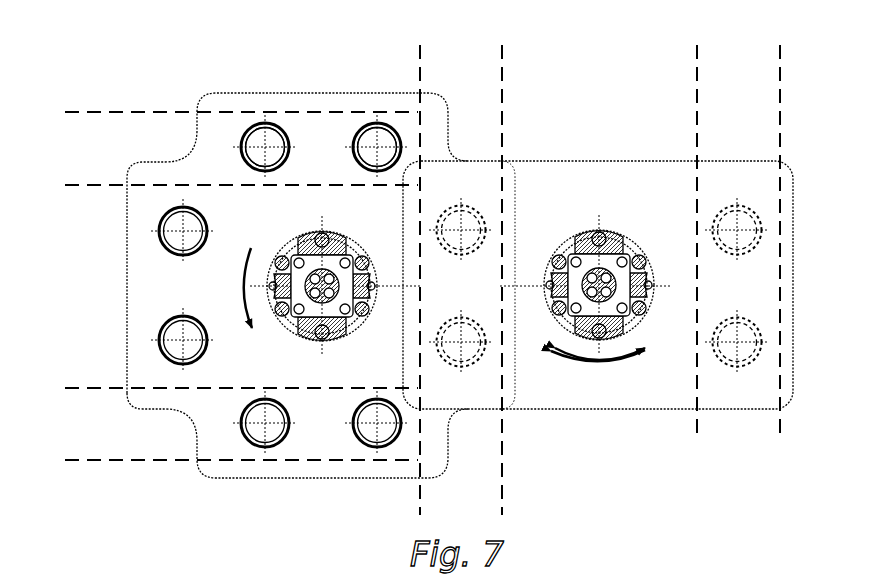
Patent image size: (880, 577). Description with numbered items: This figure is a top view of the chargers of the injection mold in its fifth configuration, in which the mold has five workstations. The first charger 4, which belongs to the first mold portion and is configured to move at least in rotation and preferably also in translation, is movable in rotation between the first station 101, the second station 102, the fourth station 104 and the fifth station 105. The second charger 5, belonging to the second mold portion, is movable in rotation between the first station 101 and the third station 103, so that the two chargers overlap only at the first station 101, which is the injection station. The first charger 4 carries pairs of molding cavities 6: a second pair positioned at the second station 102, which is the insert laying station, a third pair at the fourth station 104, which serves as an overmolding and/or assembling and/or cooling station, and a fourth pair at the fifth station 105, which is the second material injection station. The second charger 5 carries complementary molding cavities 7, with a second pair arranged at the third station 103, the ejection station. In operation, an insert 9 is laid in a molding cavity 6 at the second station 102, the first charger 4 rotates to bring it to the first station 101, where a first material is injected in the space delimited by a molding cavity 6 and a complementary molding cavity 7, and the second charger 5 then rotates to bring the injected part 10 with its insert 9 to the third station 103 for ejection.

The first movable charger 4 is at (324, 502).
The second movable charger 5 is at (621, 443).
The molding cavity 6 is at (265, 140).
The complementary molding cavity 7 is at (463, 229).
The insert 9 is at (246, 135).
The injected part 10 is at (758, 213).
The first station 101 is at (502, 58).
The second station 102 is at (75, 112).
The third station 103 is at (780, 58).
The fourth station 104 is at (75, 388).
The fifth station 105 is at (90, 185).